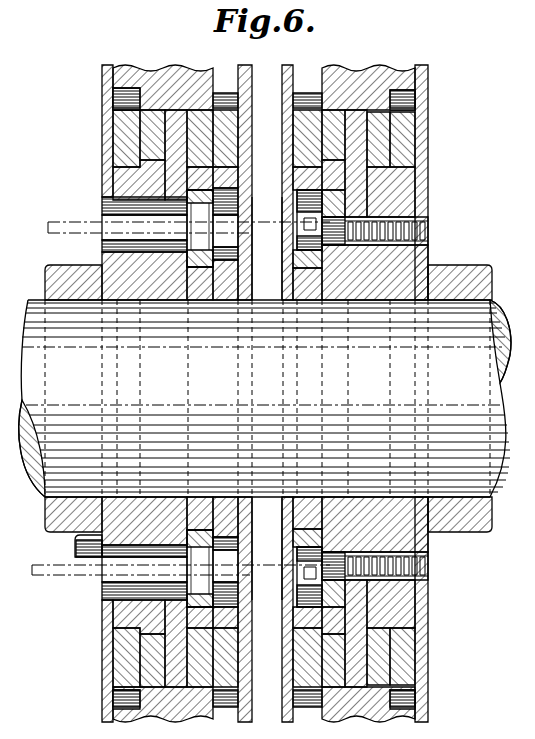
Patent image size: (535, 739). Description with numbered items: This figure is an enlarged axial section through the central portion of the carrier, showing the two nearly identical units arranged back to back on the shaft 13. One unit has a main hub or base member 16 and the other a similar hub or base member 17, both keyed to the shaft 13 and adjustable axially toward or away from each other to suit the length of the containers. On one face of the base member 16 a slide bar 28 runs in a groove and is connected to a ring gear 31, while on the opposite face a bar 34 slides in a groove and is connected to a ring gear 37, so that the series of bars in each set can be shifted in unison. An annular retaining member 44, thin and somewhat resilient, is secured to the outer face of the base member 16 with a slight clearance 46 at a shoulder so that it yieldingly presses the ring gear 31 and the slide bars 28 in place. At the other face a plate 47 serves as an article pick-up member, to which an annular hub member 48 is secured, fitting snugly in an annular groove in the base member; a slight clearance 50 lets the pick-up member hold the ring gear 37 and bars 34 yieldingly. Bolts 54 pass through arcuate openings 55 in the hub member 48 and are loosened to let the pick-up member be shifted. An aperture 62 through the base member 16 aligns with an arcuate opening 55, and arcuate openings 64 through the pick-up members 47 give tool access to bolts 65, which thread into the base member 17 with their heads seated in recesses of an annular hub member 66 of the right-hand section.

The shaft 13 is at (80, 452).
The main hub or base member 16 is at (137, 75).
The hub or base member 17 is at (355, 85).
The slide bar 28 is at (150, 112).
The ring gear 31 is at (125, 135).
The bar 34 is at (200, 118).
The ring gear 37 is at (228, 108).
The annular retaining member 44 is at (102, 103).
The clearance 46 is at (113, 185).
The plate 47 is at (244, 83).
The annular hub member 48 is at (198, 260).
The clearance 50 is at (240, 178).
The bolts 54 is at (75, 548).
The arcuate openings 55 is at (197, 245).
The aperture 62 is at (118, 242).
The arcuate openings 64 is at (292, 243).
The bolts 65 is at (415, 215).
The annular hub member 66 is at (337, 262).